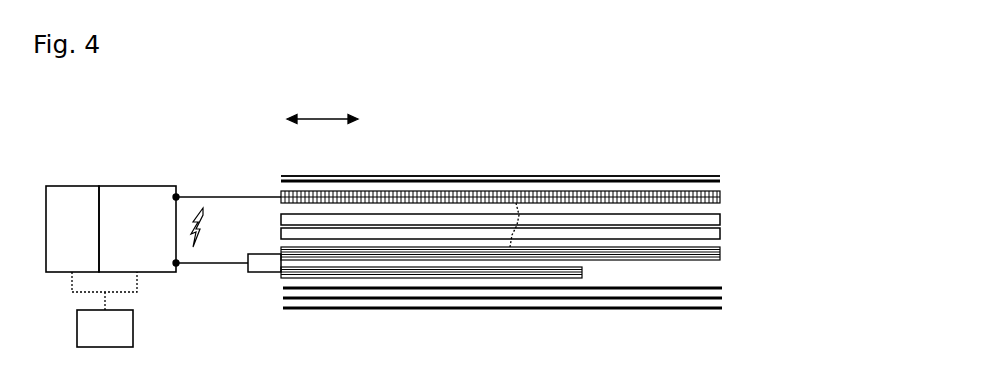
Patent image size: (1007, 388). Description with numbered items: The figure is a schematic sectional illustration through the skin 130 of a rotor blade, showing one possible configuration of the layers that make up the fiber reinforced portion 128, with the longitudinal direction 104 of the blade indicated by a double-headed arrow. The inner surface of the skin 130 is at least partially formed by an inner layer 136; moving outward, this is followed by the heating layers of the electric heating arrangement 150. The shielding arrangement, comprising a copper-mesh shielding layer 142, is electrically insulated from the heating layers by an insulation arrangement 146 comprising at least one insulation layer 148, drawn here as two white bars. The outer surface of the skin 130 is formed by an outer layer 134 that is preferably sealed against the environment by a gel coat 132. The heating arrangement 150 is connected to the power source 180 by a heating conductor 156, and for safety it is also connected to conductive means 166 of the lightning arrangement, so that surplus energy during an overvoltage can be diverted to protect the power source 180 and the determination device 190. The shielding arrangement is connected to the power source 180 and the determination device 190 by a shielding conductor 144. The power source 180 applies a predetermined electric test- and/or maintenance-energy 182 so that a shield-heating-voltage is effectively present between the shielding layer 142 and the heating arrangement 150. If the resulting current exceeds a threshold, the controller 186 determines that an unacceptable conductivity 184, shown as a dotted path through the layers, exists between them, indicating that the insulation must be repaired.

The longitudinal direction 104 is at (320, 118).
The fiber reinforced portion 128 is at (561, 213).
The skin 130 is at (561, 200).
The gel coat 132 is at (625, 177).
The outer layer 134 is at (718, 177).
The inner layer 136 is at (740, 305).
The shielding layer 142 is at (720, 197).
The shielding conductor 144 is at (233, 195).
The insulation arrangement 146 is at (758, 228).
The insulation layer 148 is at (720, 235).
The electric heating arrangement 150 is at (733, 268).
The heating conductor 156 is at (193, 263).
The conductive means 166 is at (194, 161).
The power source 180 is at (157, 242).
The electric test- and/or maintenance-energy 182 is at (203, 232).
The unacceptable conductivity 184 is at (518, 222).
The controller 186 is at (125, 342).
The determination device 190 is at (92, 242).